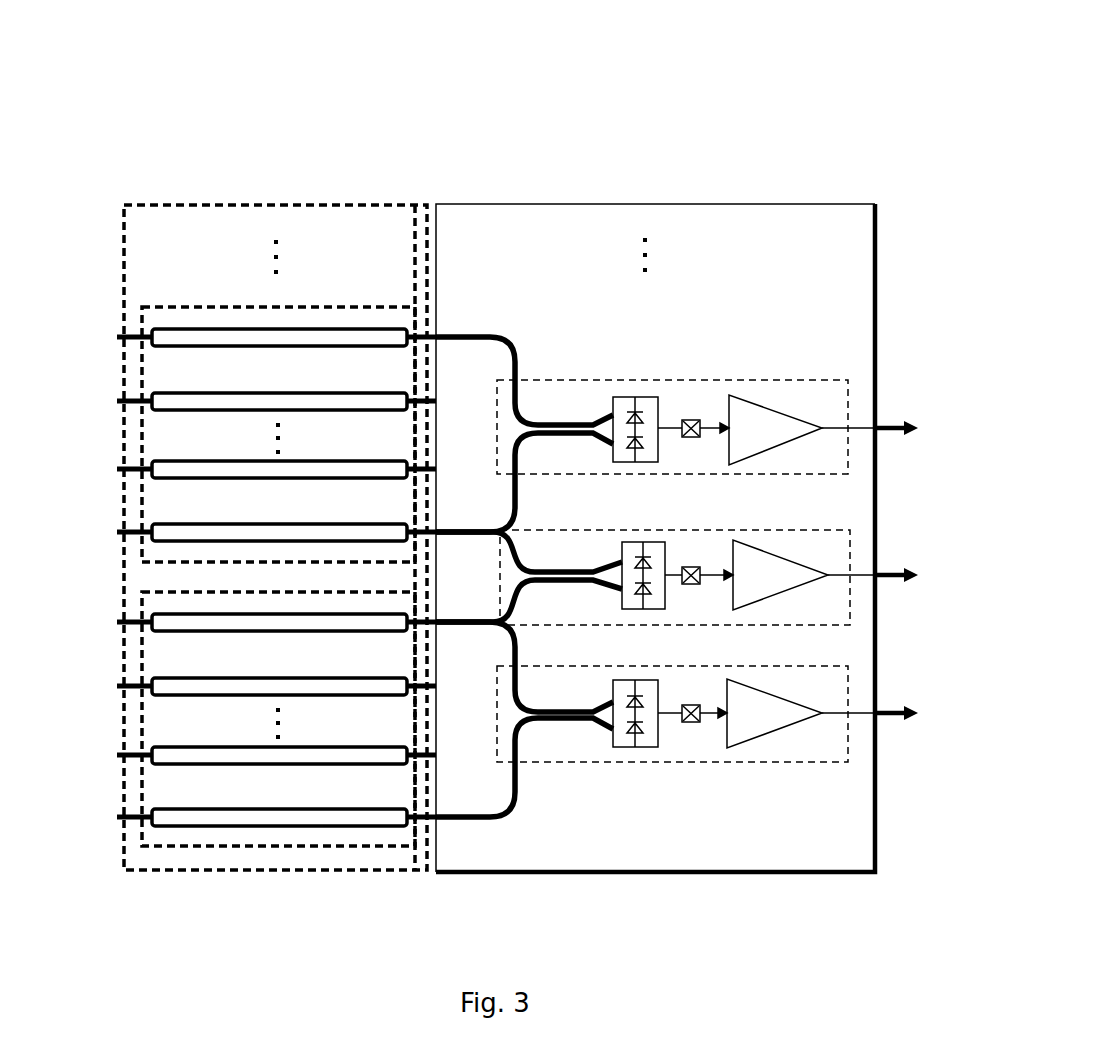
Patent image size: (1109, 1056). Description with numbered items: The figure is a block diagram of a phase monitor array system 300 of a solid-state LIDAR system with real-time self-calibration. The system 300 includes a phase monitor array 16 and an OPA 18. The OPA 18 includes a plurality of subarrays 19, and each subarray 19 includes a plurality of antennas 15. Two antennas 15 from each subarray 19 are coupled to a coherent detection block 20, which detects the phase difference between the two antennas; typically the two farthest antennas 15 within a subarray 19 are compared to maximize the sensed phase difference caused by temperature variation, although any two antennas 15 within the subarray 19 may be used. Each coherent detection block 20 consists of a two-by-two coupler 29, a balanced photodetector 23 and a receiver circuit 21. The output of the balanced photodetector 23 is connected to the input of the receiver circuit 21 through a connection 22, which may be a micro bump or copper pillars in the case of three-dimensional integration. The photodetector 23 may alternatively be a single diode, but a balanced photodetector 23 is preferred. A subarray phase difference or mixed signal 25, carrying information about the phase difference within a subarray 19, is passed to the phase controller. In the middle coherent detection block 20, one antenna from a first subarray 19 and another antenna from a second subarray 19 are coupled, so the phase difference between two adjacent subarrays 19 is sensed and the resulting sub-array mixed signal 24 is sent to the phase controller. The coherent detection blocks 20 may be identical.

The phase monitor array system 300 is at (683, 64).
The antenna 15 is at (140, 337).
The phase monitor array 16 is at (588, 204).
The OPA 18 is at (225, 205).
The subarray 19 is at (373, 307).
The coherent detection block 20 is at (822, 393).
The receiver circuit 21 is at (770, 453).
The connection 22 is at (692, 437).
The balanced photodetector 23 is at (645, 397).
The sub-array mixed signal 24 is at (917, 575).
The mixed signal 25 is at (917, 715).
The 2×2 coupler 29 is at (558, 722).